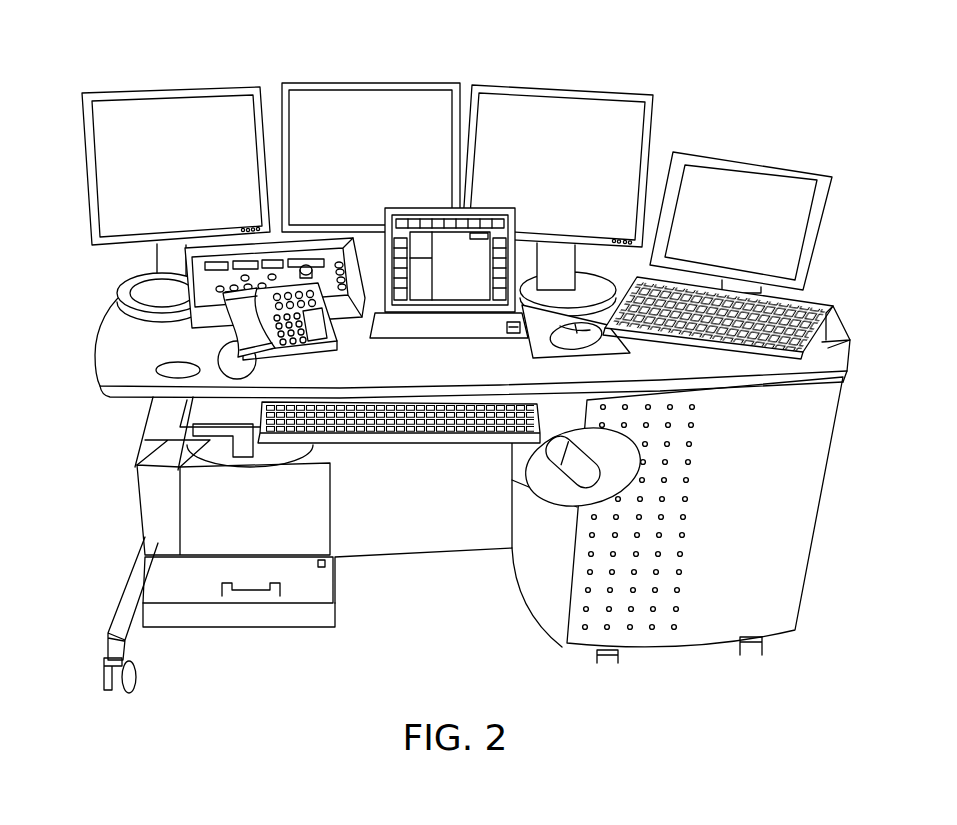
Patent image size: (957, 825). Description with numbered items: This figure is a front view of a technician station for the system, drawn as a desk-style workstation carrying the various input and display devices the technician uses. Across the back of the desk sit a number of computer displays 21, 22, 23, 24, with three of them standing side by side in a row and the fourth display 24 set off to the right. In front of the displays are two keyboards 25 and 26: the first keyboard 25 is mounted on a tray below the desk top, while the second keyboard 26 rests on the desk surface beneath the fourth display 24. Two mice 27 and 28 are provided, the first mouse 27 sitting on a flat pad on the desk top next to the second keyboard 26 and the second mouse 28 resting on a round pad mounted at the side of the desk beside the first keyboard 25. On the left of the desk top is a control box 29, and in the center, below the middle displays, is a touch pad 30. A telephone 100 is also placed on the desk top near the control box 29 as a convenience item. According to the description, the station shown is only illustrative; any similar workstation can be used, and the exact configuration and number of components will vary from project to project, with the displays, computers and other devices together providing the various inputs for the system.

The telephone 100 is at (233, 338).
The computer display 21 is at (195, 100).
The computer display 22 is at (377, 100).
The computer display 23 is at (603, 105).
The computer display 24 is at (757, 180).
The keyboard 25 is at (410, 437).
The keyboard 26 is at (835, 313).
The mouse 27 is at (709, 324).
The mouse 28 is at (570, 474).
The control box 29 is at (190, 325).
The touch pad 30 is at (433, 302).